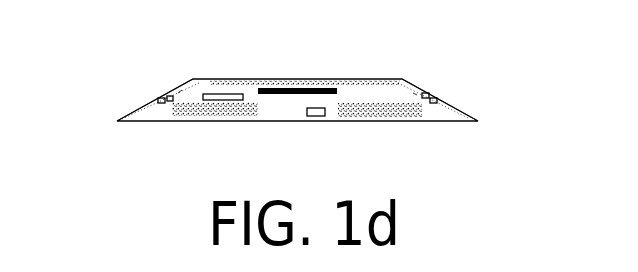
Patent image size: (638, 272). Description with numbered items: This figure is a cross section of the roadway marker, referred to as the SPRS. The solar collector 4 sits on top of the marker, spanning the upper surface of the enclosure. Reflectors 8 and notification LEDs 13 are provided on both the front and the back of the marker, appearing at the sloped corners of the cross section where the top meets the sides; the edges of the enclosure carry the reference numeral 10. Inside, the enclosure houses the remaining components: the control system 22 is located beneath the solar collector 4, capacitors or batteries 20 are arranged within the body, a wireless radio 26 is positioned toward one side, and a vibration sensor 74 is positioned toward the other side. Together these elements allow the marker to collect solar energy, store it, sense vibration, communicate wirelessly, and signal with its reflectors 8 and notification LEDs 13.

The solar collector 4 is at (306, 86).
The reflector 8 is at (182, 92).
The side edge 10 is at (157, 101).
The notification LED 13 is at (165, 97).
The capacitors or batteries 20 is at (398, 112).
The control system 22 is at (293, 94).
The wireless radio 26 is at (210, 100).
The vibration sensor 74 is at (317, 116).